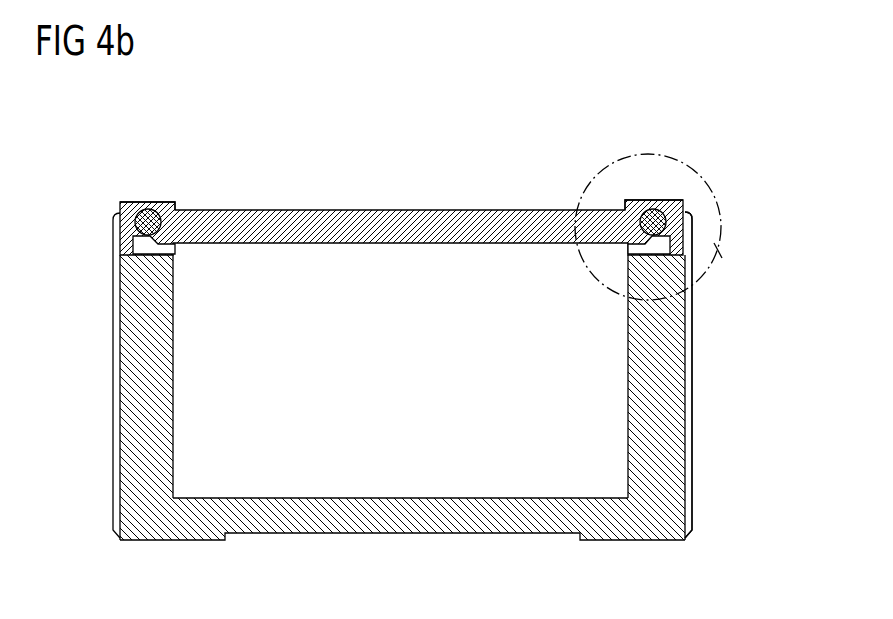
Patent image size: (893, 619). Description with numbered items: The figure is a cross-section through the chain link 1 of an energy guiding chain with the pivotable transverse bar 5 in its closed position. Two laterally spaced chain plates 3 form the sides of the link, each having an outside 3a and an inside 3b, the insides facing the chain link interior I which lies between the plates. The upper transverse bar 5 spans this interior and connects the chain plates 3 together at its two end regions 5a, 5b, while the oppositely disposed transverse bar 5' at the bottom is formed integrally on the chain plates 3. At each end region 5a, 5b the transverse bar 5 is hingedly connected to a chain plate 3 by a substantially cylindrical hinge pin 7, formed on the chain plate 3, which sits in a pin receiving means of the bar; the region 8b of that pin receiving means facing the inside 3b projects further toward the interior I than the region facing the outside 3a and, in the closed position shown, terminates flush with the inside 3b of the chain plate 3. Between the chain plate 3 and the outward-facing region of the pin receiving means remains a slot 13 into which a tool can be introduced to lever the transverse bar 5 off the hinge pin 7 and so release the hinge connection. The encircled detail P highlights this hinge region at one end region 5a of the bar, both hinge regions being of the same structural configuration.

The chain link 1 is at (717, 361).
The chain plate 3 is at (132, 448).
The outside of the chain plate 3a is at (112, 384).
The inside of the chain plate 3b is at (176, 405).
The transverse bar 5 is at (401, 205).
The oppositely disposed transverse bar 5' is at (402, 543).
The end region of the transverse bar 5a is at (669, 184).
The end region of the transverse bar 5b is at (149, 182).
The hinge pin 7 is at (122, 213).
The region of the pin receiving means facing the inside of the chain plate 8b is at (177, 246).
The slot 13 is at (719, 251).
The detail region P is at (595, 181).
The chain link interior I is at (403, 379).